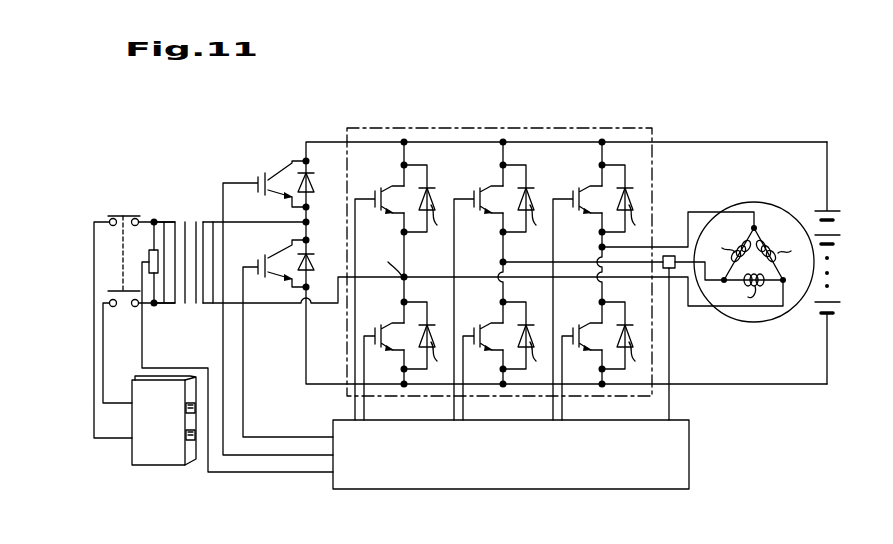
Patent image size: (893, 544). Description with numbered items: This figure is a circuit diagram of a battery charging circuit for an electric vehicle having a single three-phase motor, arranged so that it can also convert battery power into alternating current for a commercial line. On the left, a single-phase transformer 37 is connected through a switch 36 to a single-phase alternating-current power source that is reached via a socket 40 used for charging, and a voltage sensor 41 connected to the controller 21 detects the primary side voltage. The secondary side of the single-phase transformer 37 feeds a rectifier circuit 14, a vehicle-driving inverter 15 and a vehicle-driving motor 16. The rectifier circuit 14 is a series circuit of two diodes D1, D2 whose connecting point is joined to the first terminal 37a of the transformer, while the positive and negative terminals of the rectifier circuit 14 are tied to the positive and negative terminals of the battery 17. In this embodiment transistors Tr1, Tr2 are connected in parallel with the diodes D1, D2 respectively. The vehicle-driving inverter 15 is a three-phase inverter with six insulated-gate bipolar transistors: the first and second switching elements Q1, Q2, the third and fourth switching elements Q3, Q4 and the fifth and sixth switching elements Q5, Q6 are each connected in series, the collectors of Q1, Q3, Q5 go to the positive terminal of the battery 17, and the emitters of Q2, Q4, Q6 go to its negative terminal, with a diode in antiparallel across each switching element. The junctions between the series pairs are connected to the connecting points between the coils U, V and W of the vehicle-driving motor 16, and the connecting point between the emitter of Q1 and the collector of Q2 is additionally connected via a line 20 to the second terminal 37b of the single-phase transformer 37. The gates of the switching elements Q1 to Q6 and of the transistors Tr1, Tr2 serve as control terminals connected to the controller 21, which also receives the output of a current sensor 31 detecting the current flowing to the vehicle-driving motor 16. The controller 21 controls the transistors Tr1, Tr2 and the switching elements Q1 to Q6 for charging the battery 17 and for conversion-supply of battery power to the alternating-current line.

The rectifier circuit 14 is at (282, 273).
The vehicle-driving inverter 15 is at (577, 128).
The vehicle-driving motor 16 is at (760, 203).
The battery 17 is at (825, 208).
The line 20 is at (324, 303).
The controller 21 is at (690, 452).
The current sensor 31 is at (669, 256).
The switch 36 is at (130, 211).
The single-phase transformer 37 is at (183, 318).
The first terminal 37a is at (300, 220).
The second terminal 37b is at (281, 305).
The socket 40 is at (152, 470).
The voltage sensor 41 is at (157, 250).
The transistor Tr1 is at (282, 176).
The transistor Tr2 is at (288, 250).
The diode D1 is at (330, 168).
The diode D2 is at (330, 250).
The first switching element Q1 is at (394, 187).
The second switching element Q2 is at (395, 324).
The third switching element Q3 is at (493, 187).
The fourth switching element Q4 is at (494, 324).
The fifth switching element Q5 is at (590, 187).
The sixth switching element Q6 is at (593, 324).